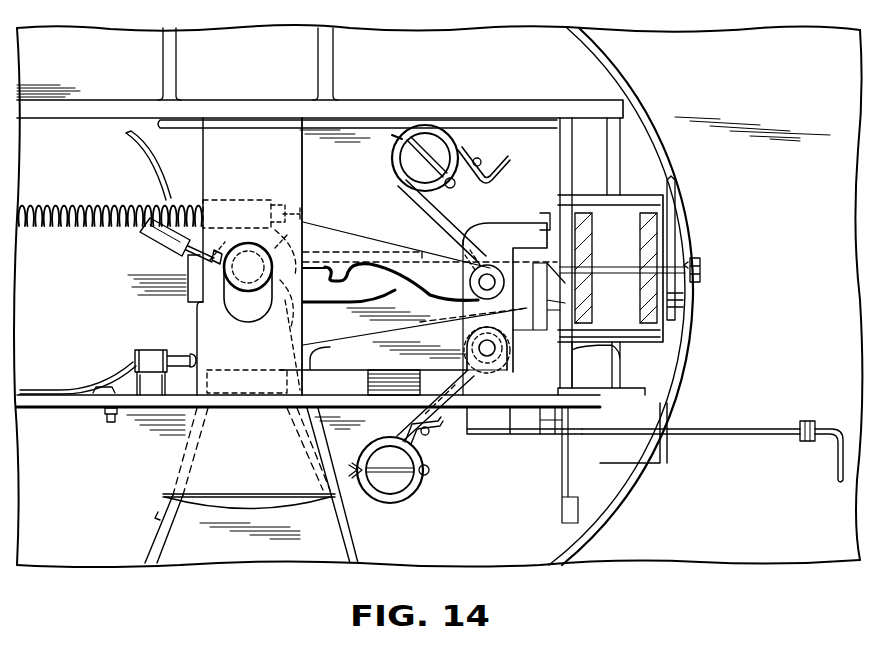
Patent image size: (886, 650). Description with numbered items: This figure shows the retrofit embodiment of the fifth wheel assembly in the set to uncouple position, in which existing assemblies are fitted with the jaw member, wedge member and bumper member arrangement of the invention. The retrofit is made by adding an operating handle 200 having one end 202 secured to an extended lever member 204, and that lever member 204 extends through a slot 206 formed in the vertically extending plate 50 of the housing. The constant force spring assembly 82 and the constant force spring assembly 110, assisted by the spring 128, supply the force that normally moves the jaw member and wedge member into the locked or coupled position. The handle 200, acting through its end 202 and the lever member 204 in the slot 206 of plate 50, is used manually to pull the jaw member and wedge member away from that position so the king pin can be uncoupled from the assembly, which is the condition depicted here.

The spring 128 is at (65, 200).
The constant force spring assembly 110 is at (382, 157).
The plate 50 is at (505, 388).
The slot 206 is at (455, 400).
The constant force spring assembly 82 is at (409, 507).
The end of operating handle 202 is at (502, 436).
The extended lever member 204 is at (549, 424).
The operating handle 200 is at (720, 427).